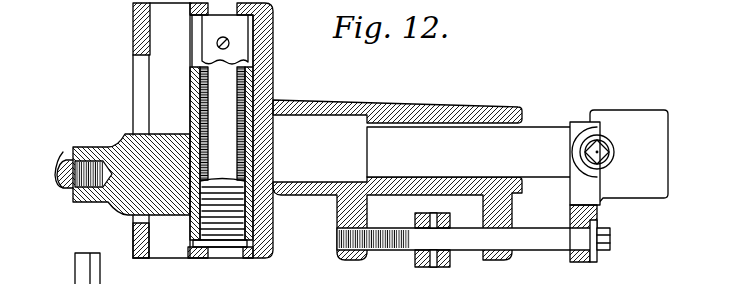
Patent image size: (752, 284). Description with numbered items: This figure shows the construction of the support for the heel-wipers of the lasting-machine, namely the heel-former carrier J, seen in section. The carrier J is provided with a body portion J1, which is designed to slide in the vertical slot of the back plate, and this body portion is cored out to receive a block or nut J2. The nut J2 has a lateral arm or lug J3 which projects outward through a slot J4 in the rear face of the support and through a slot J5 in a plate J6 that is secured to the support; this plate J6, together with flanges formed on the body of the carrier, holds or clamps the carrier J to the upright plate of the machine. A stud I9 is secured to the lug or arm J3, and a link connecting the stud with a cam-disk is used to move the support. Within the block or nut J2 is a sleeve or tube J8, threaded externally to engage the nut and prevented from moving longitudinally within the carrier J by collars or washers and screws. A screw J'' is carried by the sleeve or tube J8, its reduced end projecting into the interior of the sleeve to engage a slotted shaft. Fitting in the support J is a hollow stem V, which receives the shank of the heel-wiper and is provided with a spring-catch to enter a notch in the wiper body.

The heel-former carrier J is at (417, 131).
The body portion J1 is at (162, 39).
The block or nut J2 is at (190, 115).
The lateral arm or lug J3 is at (131, 170).
The slot J4 is at (156, 91).
The slot J5 is at (136, 74).
The plate J6 is at (133, 41).
The sleeve or tube J8 is at (220, 131).
The screw J'' is at (253, 30).
The stud I9 is at (58, 180).
The hollow stem V is at (641, 116).